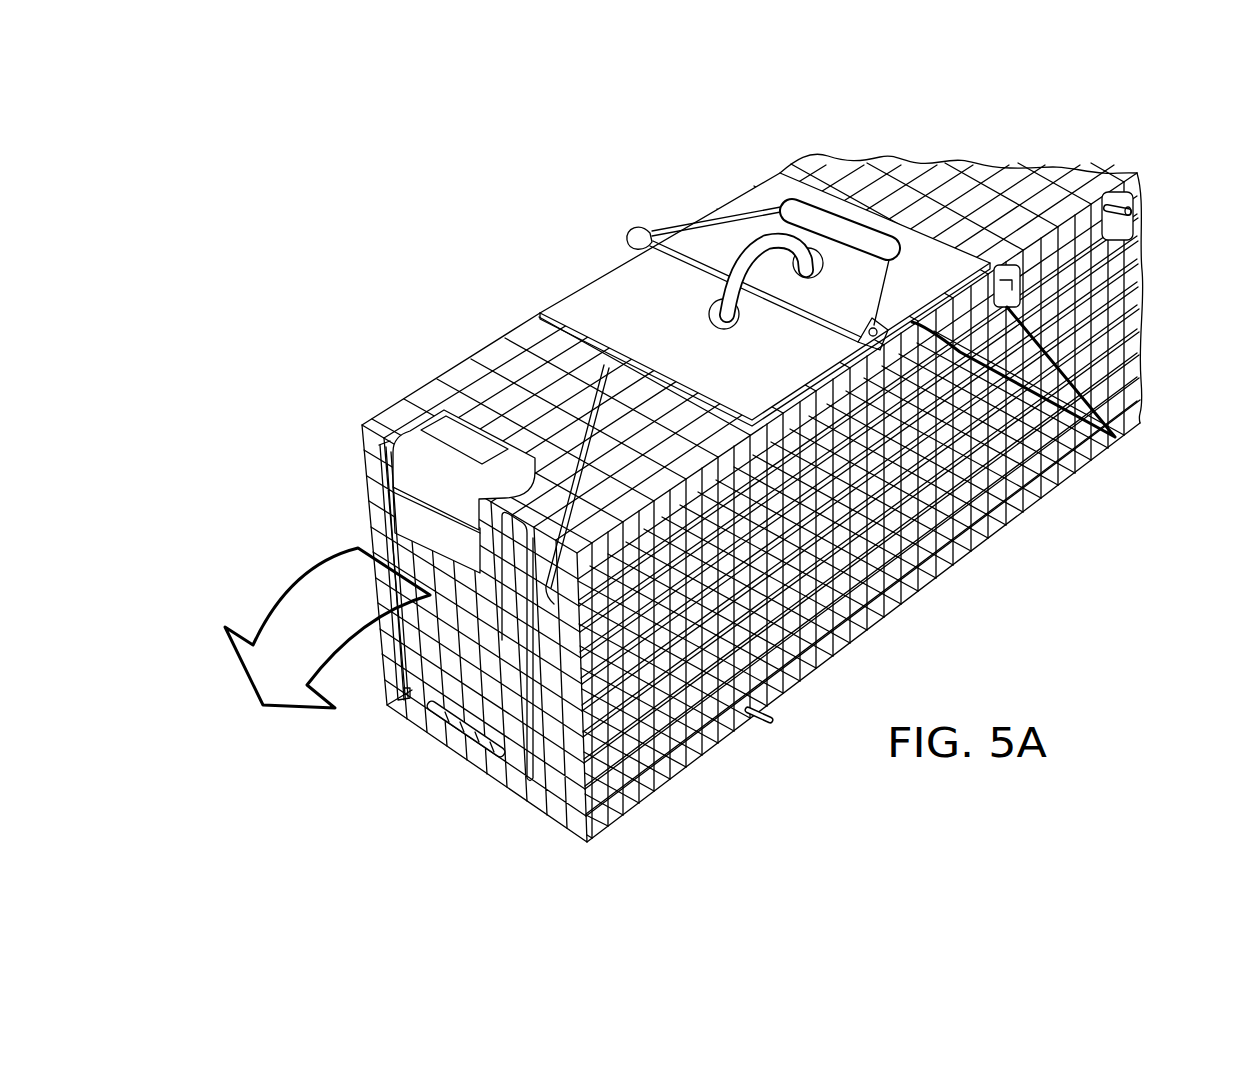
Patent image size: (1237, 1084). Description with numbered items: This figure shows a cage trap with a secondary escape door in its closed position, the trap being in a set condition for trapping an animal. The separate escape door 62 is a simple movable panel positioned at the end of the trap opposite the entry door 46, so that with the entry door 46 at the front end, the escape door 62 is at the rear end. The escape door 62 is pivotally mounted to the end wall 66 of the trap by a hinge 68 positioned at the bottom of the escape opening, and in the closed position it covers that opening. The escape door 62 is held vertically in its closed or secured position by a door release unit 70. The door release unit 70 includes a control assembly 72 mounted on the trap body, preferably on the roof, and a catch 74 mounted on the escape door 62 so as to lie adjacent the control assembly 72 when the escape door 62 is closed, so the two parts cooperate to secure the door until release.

The entry door 46 is at (1083, 368).
The escape door 62 is at (398, 532).
The end wall 66 is at (370, 468).
The hinge 68 is at (488, 758).
The door release unit 70 is at (492, 426).
The control assembly 72 is at (413, 437).
The catch 74 is at (412, 505).